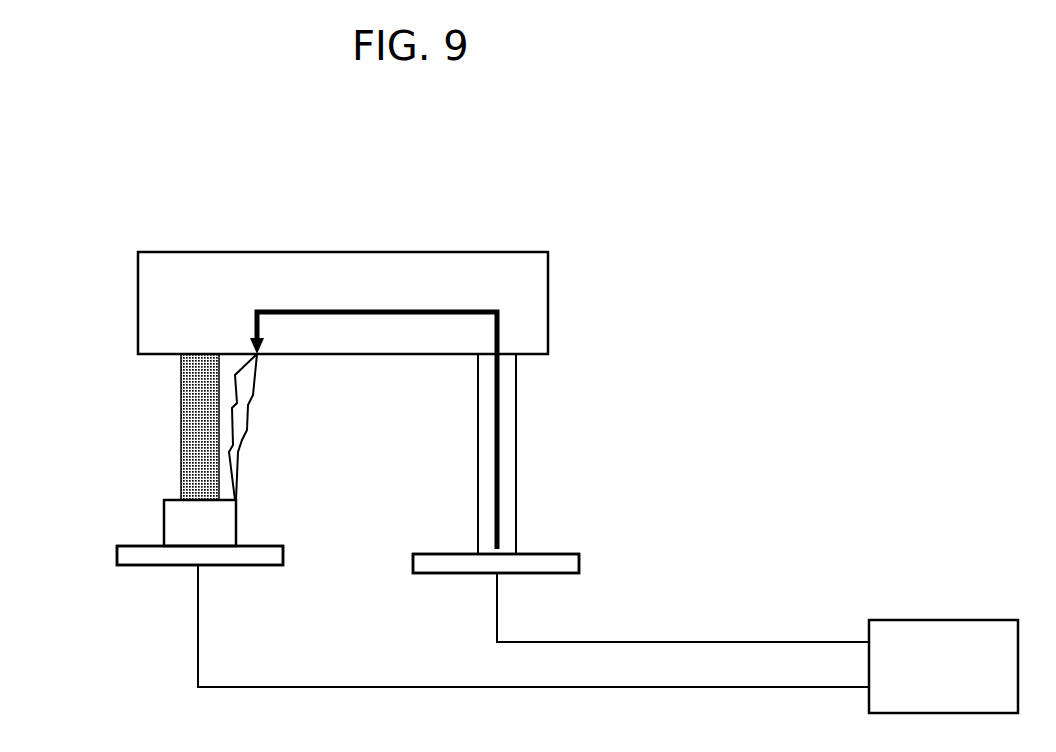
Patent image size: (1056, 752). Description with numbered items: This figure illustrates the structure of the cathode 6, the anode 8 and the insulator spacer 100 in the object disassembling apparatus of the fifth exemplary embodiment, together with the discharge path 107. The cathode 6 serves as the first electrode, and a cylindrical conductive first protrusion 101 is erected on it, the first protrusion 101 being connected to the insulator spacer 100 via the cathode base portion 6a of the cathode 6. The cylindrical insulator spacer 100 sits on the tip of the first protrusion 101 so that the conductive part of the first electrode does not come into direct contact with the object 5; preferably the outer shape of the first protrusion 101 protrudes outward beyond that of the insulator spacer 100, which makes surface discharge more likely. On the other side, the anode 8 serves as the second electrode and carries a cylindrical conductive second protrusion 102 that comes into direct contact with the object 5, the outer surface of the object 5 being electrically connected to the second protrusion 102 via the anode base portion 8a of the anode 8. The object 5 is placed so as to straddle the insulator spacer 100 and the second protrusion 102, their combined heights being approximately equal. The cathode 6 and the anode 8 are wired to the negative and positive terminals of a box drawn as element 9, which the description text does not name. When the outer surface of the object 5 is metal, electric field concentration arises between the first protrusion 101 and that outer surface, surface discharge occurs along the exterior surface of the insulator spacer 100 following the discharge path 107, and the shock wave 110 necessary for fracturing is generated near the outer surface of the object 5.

The object 5 is at (343, 251).
The discharge path 107 is at (433, 311).
The insulator spacer 100 is at (199, 450).
The shock wave 110 is at (241, 452).
The first protrusion 101 is at (222, 525).
The cathode base portion 6a is at (285, 558).
The cathode 6 is at (110, 557).
The second protrusion 102 is at (517, 452).
The anode base portion 8a is at (540, 553).
The anode 8 is at (586, 563).
The power supply 9 is at (950, 620).